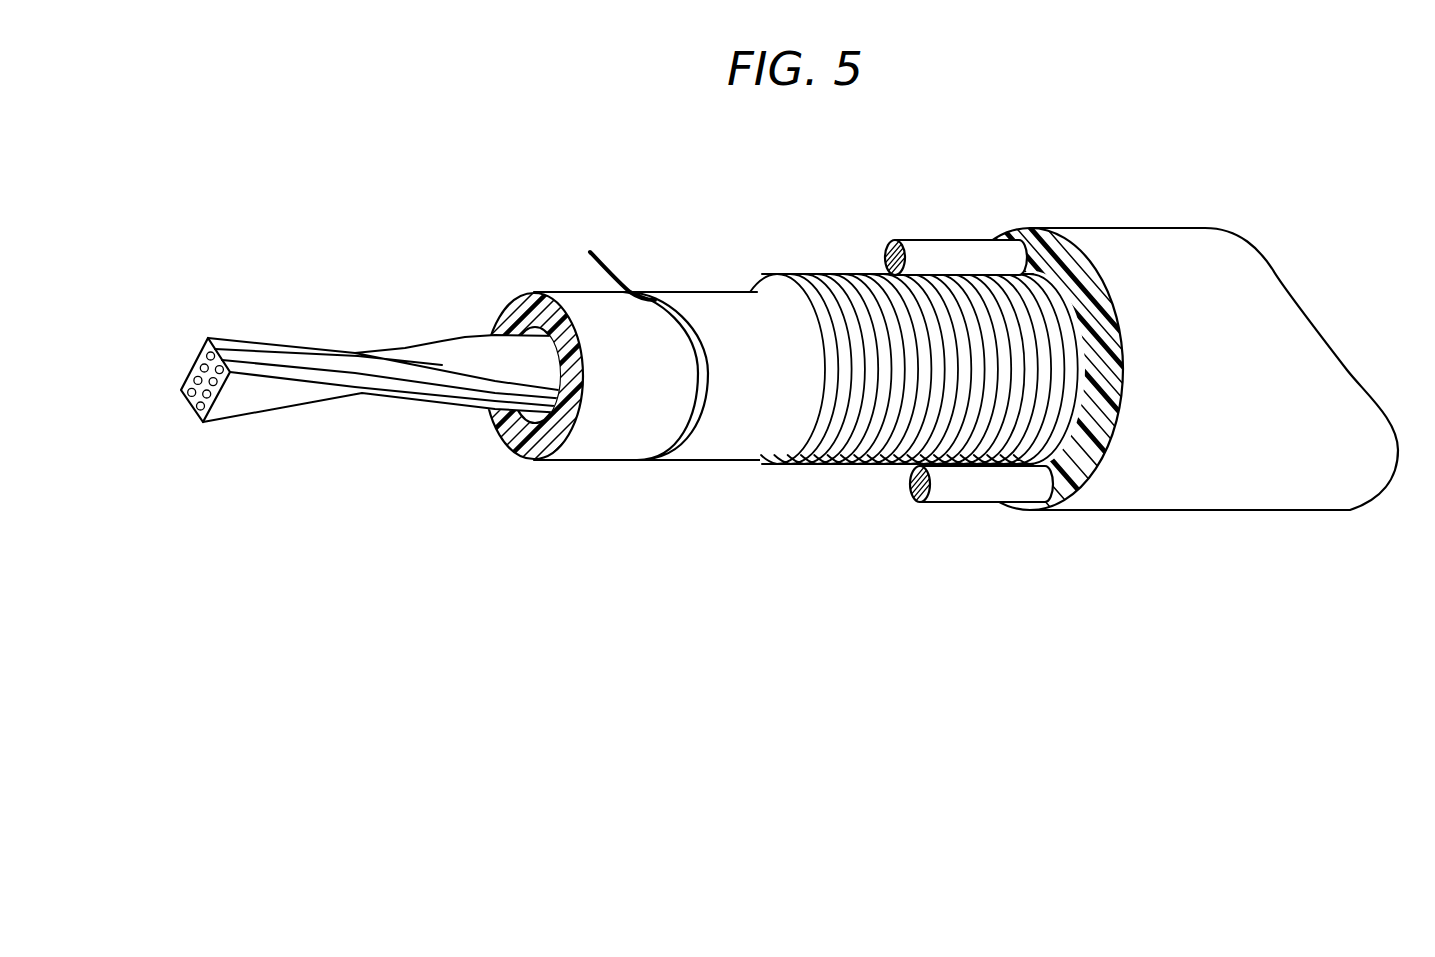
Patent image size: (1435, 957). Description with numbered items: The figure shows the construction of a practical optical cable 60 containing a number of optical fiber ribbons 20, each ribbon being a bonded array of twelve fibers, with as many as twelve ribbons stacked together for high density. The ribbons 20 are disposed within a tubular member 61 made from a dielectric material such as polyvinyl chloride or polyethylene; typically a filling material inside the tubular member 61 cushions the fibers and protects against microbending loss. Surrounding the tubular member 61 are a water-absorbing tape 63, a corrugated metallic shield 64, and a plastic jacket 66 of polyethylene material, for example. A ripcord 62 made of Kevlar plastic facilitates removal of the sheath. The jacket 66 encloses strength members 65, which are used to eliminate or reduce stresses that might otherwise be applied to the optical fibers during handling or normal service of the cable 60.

The ribbons 20 is at (280, 372).
The optical cable 60 is at (1160, 228).
The tubular member 61 is at (498, 312).
The ripcord 62 is at (606, 285).
The water-absorbing tape 63 is at (712, 304).
The corrugated metallic shield 64 is at (833, 272).
The strength members 65 is at (947, 255).
The plastic jacket 66 is at (1050, 257).